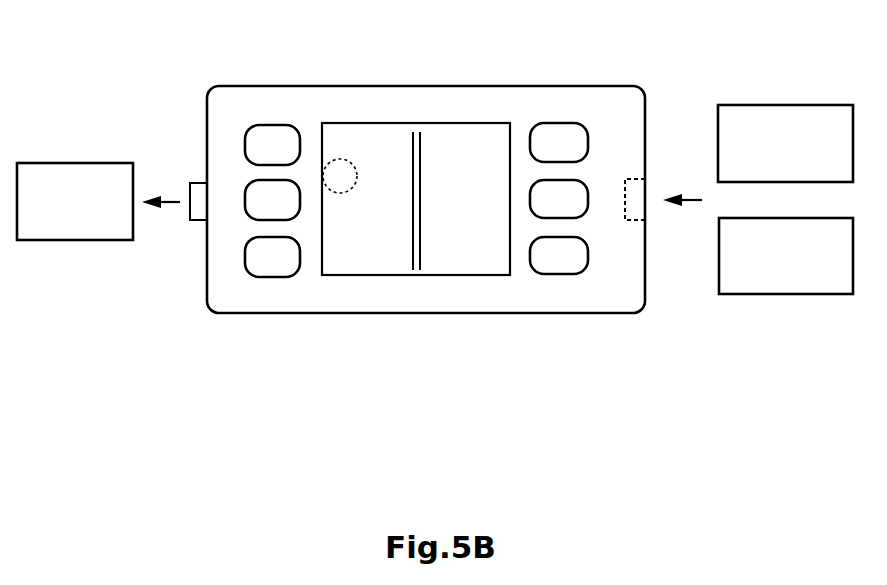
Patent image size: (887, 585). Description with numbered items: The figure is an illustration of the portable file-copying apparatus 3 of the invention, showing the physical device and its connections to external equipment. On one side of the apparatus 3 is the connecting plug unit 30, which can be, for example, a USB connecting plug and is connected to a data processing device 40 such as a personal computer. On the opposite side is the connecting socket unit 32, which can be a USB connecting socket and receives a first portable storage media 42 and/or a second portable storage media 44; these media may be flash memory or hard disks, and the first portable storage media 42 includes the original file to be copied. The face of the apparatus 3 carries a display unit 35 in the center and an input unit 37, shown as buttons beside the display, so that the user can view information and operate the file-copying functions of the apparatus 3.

The portable file-copying apparatus 3 is at (245, 86).
The connecting plug unit 30 is at (190, 183).
The connecting socket unit 32 is at (630, 179).
The display unit 35 is at (380, 276).
The input unit 37 is at (568, 274).
The data processing device 40 is at (80, 163).
The first portable storage media 42 is at (782, 105).
The second portable storage media 44 is at (776, 295).